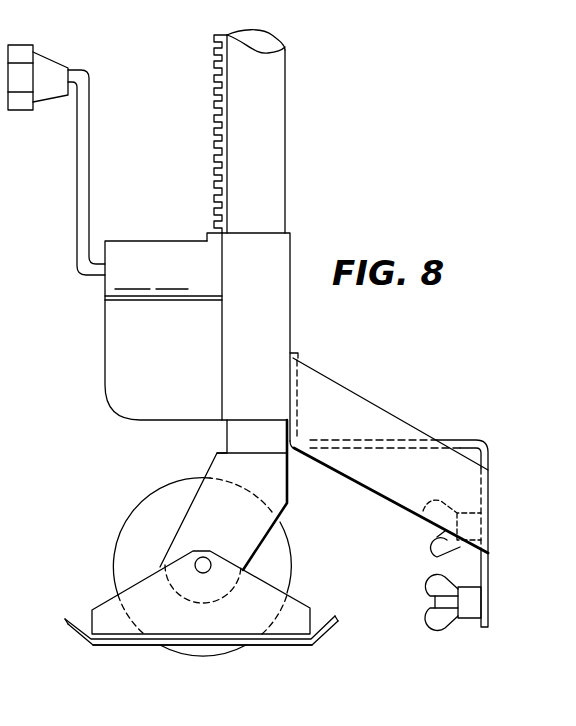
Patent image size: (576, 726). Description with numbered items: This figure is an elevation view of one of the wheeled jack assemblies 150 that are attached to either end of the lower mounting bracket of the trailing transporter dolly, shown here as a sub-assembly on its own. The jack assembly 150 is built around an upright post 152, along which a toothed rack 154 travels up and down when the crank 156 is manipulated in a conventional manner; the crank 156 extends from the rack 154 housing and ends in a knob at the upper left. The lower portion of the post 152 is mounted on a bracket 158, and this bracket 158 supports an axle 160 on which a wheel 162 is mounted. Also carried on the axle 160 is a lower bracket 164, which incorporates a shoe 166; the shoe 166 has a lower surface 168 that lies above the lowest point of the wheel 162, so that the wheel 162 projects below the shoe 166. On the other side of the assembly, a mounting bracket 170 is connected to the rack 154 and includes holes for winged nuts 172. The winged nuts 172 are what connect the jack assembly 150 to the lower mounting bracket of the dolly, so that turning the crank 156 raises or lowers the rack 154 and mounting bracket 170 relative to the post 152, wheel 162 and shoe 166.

The wheeled jack assembly 150 is at (323, 228).
The post 152 is at (276, 120).
The rack 154 is at (160, 247).
The crank 156 is at (90, 147).
The bracket 158 is at (282, 502).
The axle 160 is at (211, 566).
The wheel 162 is at (145, 505).
The lower bracket 164 is at (290, 602).
The shoe 166 is at (320, 627).
The lower surface 168 is at (263, 647).
The mounting bracket 170 is at (350, 393).
The winged nuts 172 is at (444, 618).